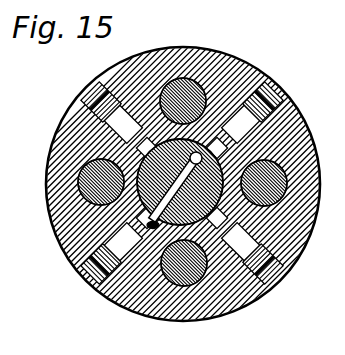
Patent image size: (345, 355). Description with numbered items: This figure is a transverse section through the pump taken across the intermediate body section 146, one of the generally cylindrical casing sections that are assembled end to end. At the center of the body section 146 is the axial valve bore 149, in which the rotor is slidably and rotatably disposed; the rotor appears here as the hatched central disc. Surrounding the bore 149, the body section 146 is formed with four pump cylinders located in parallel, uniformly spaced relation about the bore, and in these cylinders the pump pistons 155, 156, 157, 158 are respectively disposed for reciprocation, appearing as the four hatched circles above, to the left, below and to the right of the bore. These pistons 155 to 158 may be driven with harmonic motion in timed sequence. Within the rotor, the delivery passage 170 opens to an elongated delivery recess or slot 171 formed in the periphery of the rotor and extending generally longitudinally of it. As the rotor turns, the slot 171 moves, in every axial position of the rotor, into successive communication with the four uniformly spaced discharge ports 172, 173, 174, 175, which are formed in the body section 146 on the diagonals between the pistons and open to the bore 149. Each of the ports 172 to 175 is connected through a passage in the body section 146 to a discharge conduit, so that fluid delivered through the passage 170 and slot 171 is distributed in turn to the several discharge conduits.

The intermediate body section 146 is at (243, 302).
The axial valve bore 149 is at (192, 141).
The pump piston 155 is at (192, 80).
The pump piston 156 is at (92, 212).
The pump piston 157 is at (168, 284).
The pump piston 158 is at (270, 203).
The delivery passage 170 is at (187, 187).
The delivery recess or slot 171 is at (157, 231).
The discharge port 172 is at (120, 250).
The discharge port 173 is at (246, 222).
The discharge port 174 is at (223, 157).
The discharge port 175 is at (140, 150).